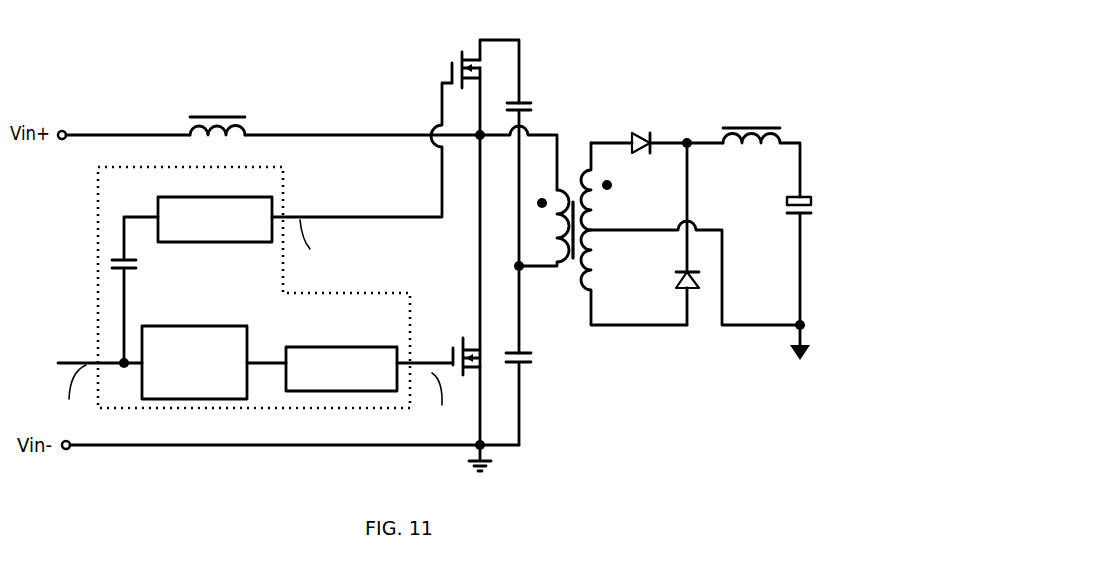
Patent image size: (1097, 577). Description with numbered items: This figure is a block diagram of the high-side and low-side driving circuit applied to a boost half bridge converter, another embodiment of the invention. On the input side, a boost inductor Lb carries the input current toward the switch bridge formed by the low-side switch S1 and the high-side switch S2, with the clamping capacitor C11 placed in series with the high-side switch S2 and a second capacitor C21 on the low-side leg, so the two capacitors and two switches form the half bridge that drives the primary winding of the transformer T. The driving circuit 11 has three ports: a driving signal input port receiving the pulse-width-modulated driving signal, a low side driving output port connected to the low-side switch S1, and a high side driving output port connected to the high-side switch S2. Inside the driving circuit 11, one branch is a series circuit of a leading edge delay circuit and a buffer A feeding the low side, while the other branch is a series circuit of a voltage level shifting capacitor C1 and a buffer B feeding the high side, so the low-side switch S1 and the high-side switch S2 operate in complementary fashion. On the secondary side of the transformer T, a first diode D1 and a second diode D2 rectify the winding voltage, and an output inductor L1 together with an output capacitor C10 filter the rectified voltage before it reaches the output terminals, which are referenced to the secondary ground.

The driving circuit 11 is at (106, 184).
The boost inductor Lb is at (217, 109).
The voltage level shifting capacitor C1 is at (137, 290).
The low-side switch S1 is at (438, 356).
The high-side switch S2 is at (467, 71).
The clamping capacitor C11 is at (539, 218).
The capacitor C21 is at (541, 399).
The transformer T is at (603, 234).
The diode D1 is at (639, 129).
The diode D2 is at (668, 234).
The output inductor L1 is at (743, 150).
The output capacitor C10 is at (779, 258).